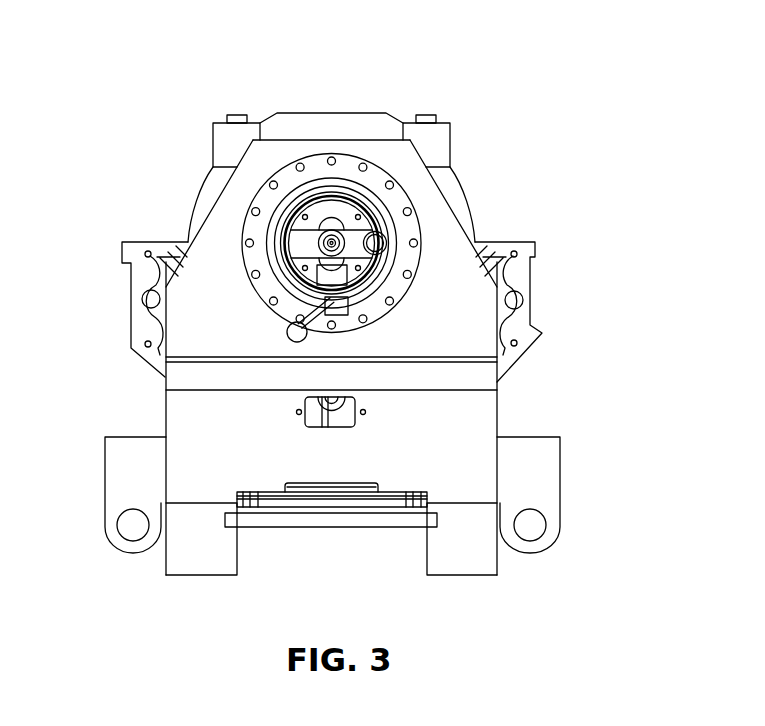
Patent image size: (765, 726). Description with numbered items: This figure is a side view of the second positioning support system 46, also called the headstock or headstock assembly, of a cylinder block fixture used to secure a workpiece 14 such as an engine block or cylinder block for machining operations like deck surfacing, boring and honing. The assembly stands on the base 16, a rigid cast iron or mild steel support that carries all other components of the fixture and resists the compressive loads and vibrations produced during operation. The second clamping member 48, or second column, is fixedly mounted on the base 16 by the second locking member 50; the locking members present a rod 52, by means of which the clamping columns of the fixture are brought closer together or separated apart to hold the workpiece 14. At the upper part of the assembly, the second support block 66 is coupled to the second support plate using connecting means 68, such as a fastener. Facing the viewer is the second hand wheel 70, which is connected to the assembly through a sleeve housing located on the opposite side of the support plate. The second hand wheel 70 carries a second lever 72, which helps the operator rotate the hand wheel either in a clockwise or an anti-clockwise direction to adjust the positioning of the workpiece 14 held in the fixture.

The second positioning support system 46 is at (606, 102).
The workpiece 14 is at (136, 253).
The base 16 is at (187, 557).
The second clamping member 48 is at (468, 338).
The second locking member 50 is at (123, 475).
The rod 52 is at (533, 525).
The second support block 66 is at (228, 142).
The connecting means 68 is at (427, 113).
The second hand wheel 70 is at (362, 215).
The second lever 72 is at (285, 333).